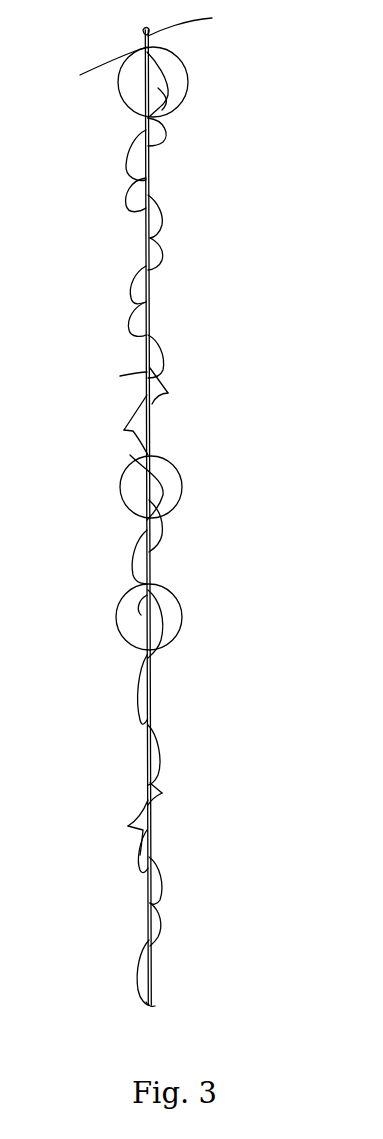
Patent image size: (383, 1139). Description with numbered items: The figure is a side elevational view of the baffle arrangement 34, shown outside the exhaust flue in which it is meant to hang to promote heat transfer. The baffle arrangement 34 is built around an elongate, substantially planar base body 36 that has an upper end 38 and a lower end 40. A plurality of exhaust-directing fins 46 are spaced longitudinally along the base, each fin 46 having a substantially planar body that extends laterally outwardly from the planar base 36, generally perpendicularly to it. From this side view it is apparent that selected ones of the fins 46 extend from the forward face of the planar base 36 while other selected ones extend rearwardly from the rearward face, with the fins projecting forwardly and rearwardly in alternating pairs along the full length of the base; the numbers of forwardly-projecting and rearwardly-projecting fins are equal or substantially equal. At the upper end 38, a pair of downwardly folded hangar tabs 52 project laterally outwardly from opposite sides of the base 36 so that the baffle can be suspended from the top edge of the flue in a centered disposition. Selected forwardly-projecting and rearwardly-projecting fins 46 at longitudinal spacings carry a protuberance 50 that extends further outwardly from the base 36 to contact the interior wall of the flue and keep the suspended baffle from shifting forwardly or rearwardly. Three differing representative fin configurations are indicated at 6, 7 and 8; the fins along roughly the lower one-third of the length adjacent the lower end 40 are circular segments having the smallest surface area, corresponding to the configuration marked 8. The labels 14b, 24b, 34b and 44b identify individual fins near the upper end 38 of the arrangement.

The planar base body 36 is at (148, 296).
The upper end 38 is at (146, 32).
The lower end 40 is at (150, 1006).
The hangar tabs 52 is at (141, 46).
The fin configuration detail indication 6 is at (185, 55).
The fin configuration detail indication 7 is at (167, 516).
The fin configuration detail indication 8 is at (166, 650).
The first loop segment 14b is at (170, 104).
The second loop segment 24b is at (168, 143).
The third loop segment 34b is at (135, 162).
The fourth loop segment 44b is at (138, 198).
The baffle arrangement 34 is at (147, 372).
The exhaust-directing fins 46 is at (163, 357).
The protuberance 50 is at (168, 393).